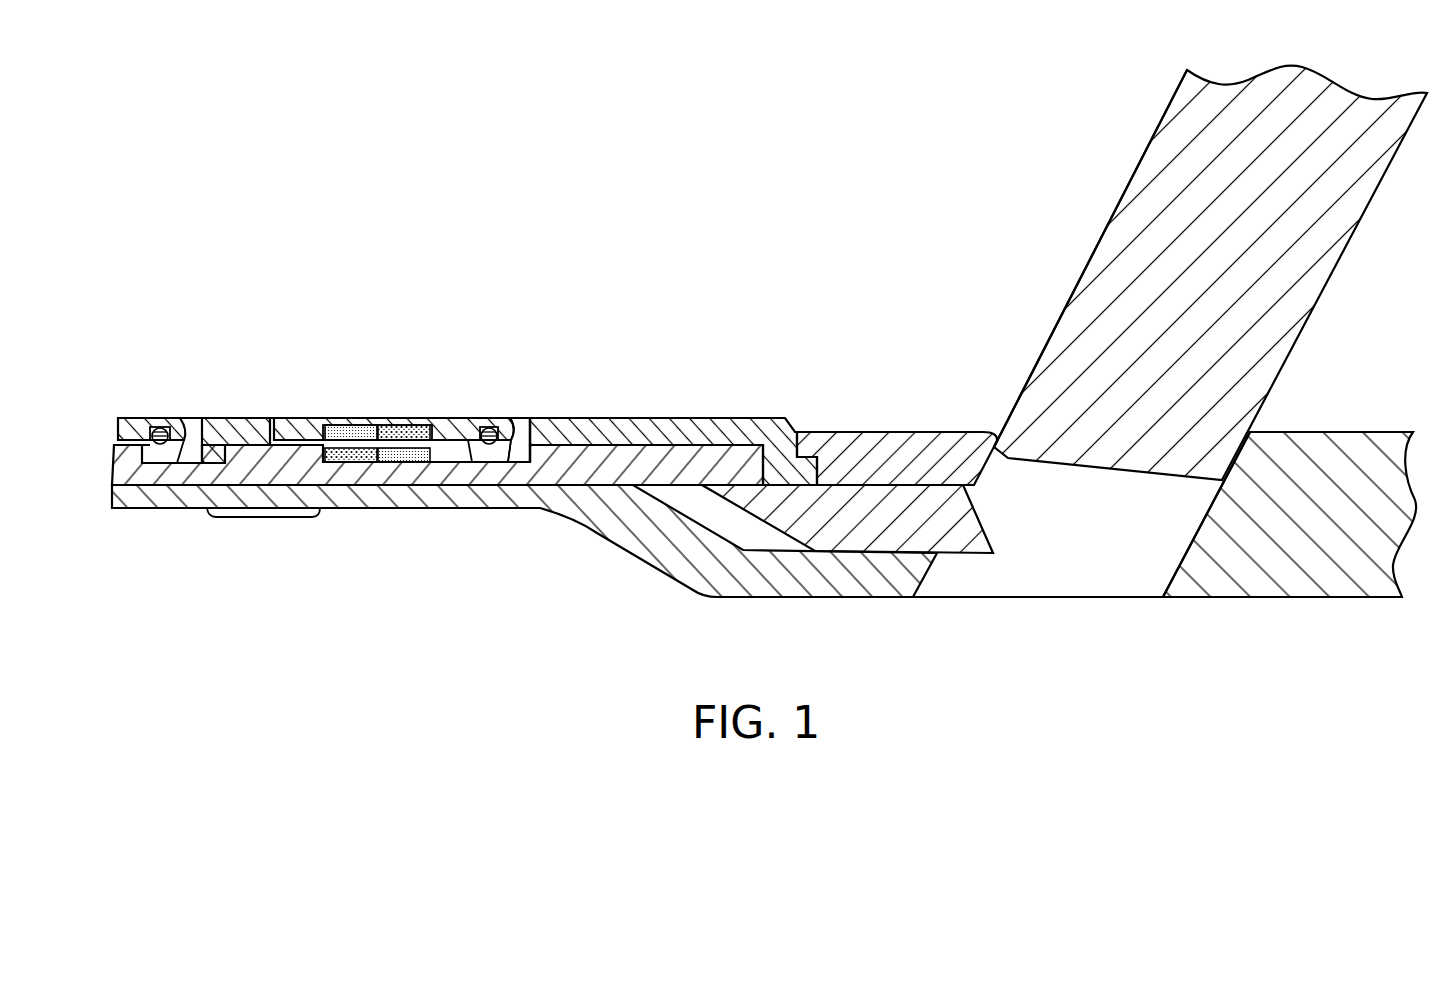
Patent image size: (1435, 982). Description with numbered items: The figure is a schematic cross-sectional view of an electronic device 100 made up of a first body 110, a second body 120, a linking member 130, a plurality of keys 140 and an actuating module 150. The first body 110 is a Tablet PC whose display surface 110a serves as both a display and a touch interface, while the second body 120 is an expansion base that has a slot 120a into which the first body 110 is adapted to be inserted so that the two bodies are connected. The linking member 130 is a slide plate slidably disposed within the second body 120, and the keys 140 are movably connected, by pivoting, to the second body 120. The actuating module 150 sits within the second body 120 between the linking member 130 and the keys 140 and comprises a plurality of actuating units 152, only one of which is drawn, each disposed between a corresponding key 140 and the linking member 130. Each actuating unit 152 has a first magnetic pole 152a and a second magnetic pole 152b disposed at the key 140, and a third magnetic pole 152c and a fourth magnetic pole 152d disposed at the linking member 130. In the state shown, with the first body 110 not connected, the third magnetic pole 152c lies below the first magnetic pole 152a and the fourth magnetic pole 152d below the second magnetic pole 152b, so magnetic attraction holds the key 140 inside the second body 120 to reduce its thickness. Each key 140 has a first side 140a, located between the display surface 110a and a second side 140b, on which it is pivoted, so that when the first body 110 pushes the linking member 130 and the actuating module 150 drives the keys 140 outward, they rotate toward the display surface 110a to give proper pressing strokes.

The electronic device 100 is at (1402, 672).
The first body 110 is at (1290, 312).
The display surface 110a is at (1082, 202).
The second body 120 is at (1270, 577).
The slot 120a is at (1163, 540).
The linking member 130 is at (825, 537).
The keys 140 is at (135, 418).
The first side 140a is at (524, 428).
The second side 140b is at (281, 429).
The actuating module 150 is at (563, 418).
The actuating units 152 is at (385, 523).
The first magnetic pole 152a is at (446, 453).
The second magnetic pole 152b is at (366, 440).
The third magnetic pole 152c is at (399, 455).
The fourth magnetic pole 152d is at (345, 463).